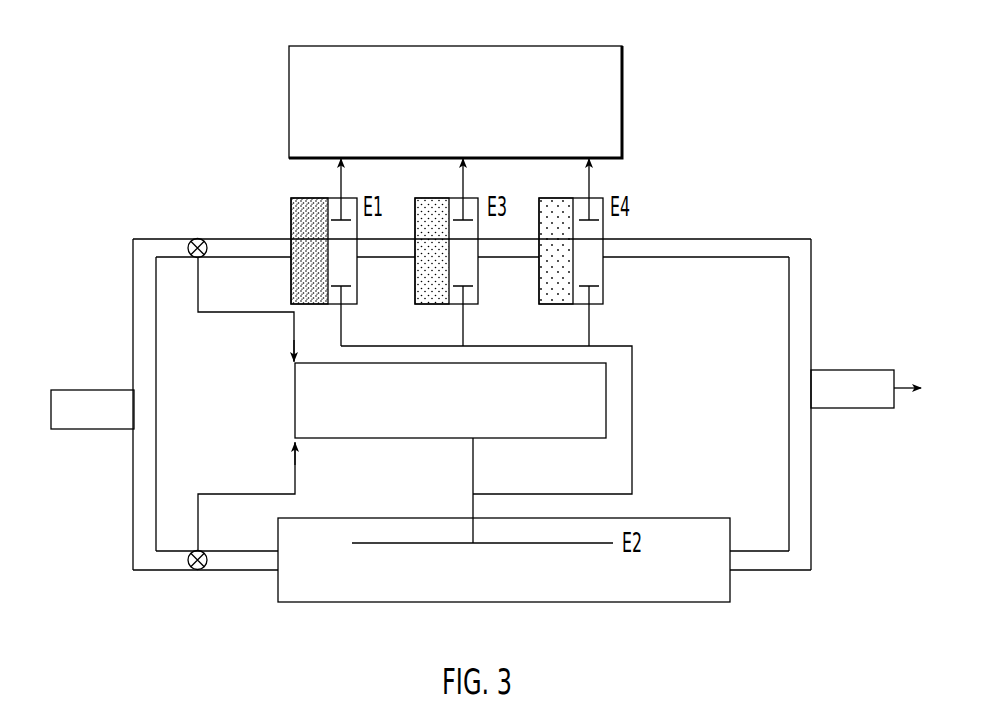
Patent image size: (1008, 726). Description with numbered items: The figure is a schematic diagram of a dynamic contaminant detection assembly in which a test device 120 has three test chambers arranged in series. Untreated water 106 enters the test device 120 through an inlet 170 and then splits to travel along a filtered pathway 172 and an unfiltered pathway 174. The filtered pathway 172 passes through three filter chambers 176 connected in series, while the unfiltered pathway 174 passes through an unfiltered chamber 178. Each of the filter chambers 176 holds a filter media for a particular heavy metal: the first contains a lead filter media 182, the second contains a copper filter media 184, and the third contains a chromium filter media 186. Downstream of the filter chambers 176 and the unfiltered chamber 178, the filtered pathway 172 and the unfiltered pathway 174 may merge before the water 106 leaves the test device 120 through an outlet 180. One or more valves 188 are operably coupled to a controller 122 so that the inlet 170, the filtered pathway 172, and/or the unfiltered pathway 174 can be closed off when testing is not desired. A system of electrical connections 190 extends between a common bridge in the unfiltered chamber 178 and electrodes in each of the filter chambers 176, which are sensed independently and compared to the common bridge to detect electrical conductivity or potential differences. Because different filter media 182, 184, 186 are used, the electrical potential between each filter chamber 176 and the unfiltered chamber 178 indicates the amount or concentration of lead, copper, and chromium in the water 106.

The untreated water 106 is at (50, 412).
The test device 120 is at (847, 82).
The controller 122 is at (440, 123).
The inlet 170 is at (75, 423).
The filtered pathway 172 is at (258, 242).
The unfiltered pathway 174 is at (253, 568).
The filter chambers 176 is at (458, 265).
The unfiltered chamber 178 is at (455, 585).
The outlet 180 is at (836, 403).
The lead filter media 182 is at (307, 290).
The copper filter media 184 is at (433, 293).
The chromium filter media 186 is at (552, 292).
The valves 188 is at (204, 256).
The electrical connections 190 is at (632, 448).